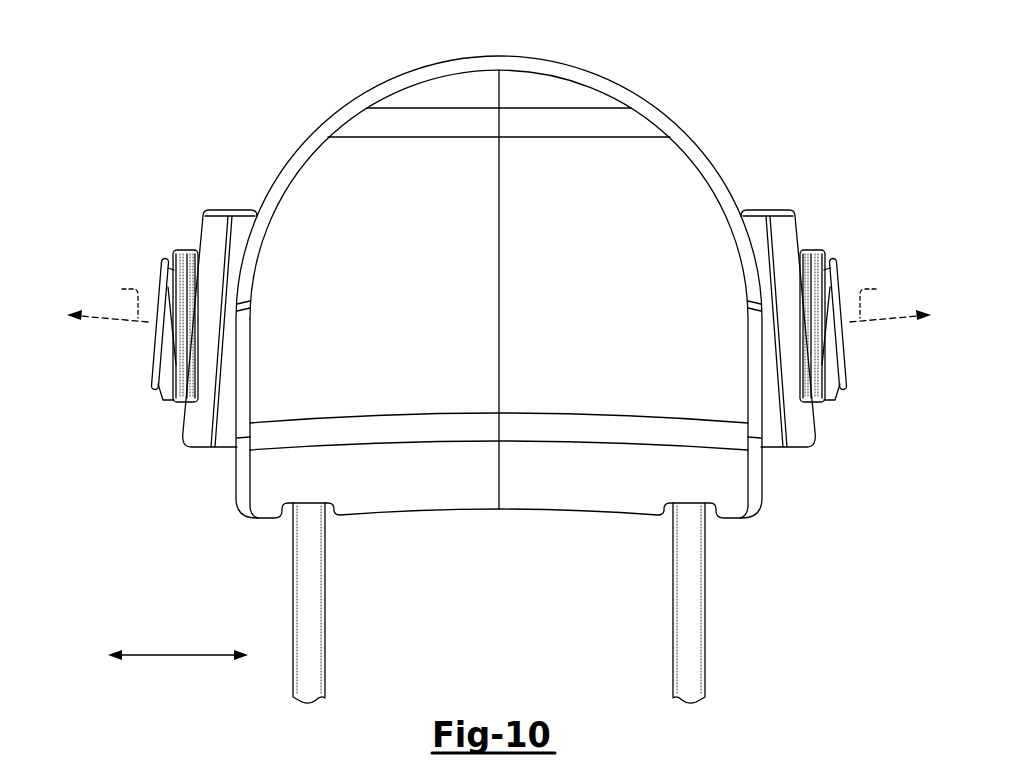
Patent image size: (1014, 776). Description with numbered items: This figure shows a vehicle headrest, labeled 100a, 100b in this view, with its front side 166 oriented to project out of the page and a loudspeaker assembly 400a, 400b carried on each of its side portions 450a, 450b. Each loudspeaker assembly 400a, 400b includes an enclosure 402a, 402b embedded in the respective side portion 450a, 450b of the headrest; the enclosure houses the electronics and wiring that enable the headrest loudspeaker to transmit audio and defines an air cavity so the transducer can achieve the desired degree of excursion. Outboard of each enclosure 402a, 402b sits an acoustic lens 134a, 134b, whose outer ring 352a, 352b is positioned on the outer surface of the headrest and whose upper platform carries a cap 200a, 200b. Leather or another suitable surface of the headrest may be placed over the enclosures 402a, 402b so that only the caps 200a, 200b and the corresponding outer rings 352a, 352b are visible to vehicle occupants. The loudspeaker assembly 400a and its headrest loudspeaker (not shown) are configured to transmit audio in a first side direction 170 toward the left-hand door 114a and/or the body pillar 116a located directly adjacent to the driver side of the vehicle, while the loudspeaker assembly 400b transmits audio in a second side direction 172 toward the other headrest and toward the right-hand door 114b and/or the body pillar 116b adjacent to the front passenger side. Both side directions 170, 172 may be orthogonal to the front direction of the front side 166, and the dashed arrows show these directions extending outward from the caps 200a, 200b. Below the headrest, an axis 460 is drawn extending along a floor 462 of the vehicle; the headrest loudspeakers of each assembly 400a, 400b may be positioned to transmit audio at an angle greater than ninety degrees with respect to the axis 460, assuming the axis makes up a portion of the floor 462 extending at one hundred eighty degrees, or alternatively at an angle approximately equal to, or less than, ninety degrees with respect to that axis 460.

The housing shell half 100a is at (608, 80).
The housing shell half 100b is at (499, 294).
The left-hand door 114a is at (936, 293).
The right-hand door 114b is at (59, 292).
The body pillar 116a is at (903, 334).
The body pillar 116b is at (92, 334).
The acoustic lens 134a is at (838, 392).
The acoustic lens 134b is at (158, 395).
The front side 166 is at (499, 358).
The first side direction 170 is at (884, 293).
The second side direction 172 is at (114, 294).
The cap 200a is at (848, 370).
The cap 200b is at (148, 371).
The outer ring 352a is at (876, 311).
The outer ring 352b is at (121, 305).
The loudspeaker assembly 400a is at (844, 285).
The loudspeaker assembly 400b is at (152, 285).
The enclosure 402a is at (815, 442).
The enclosure 402b is at (183, 441).
The side portion 450a is at (755, 405).
The side portion 450b is at (243, 405).
The axis 460 is at (174, 700).
The floor 462 is at (86, 735).